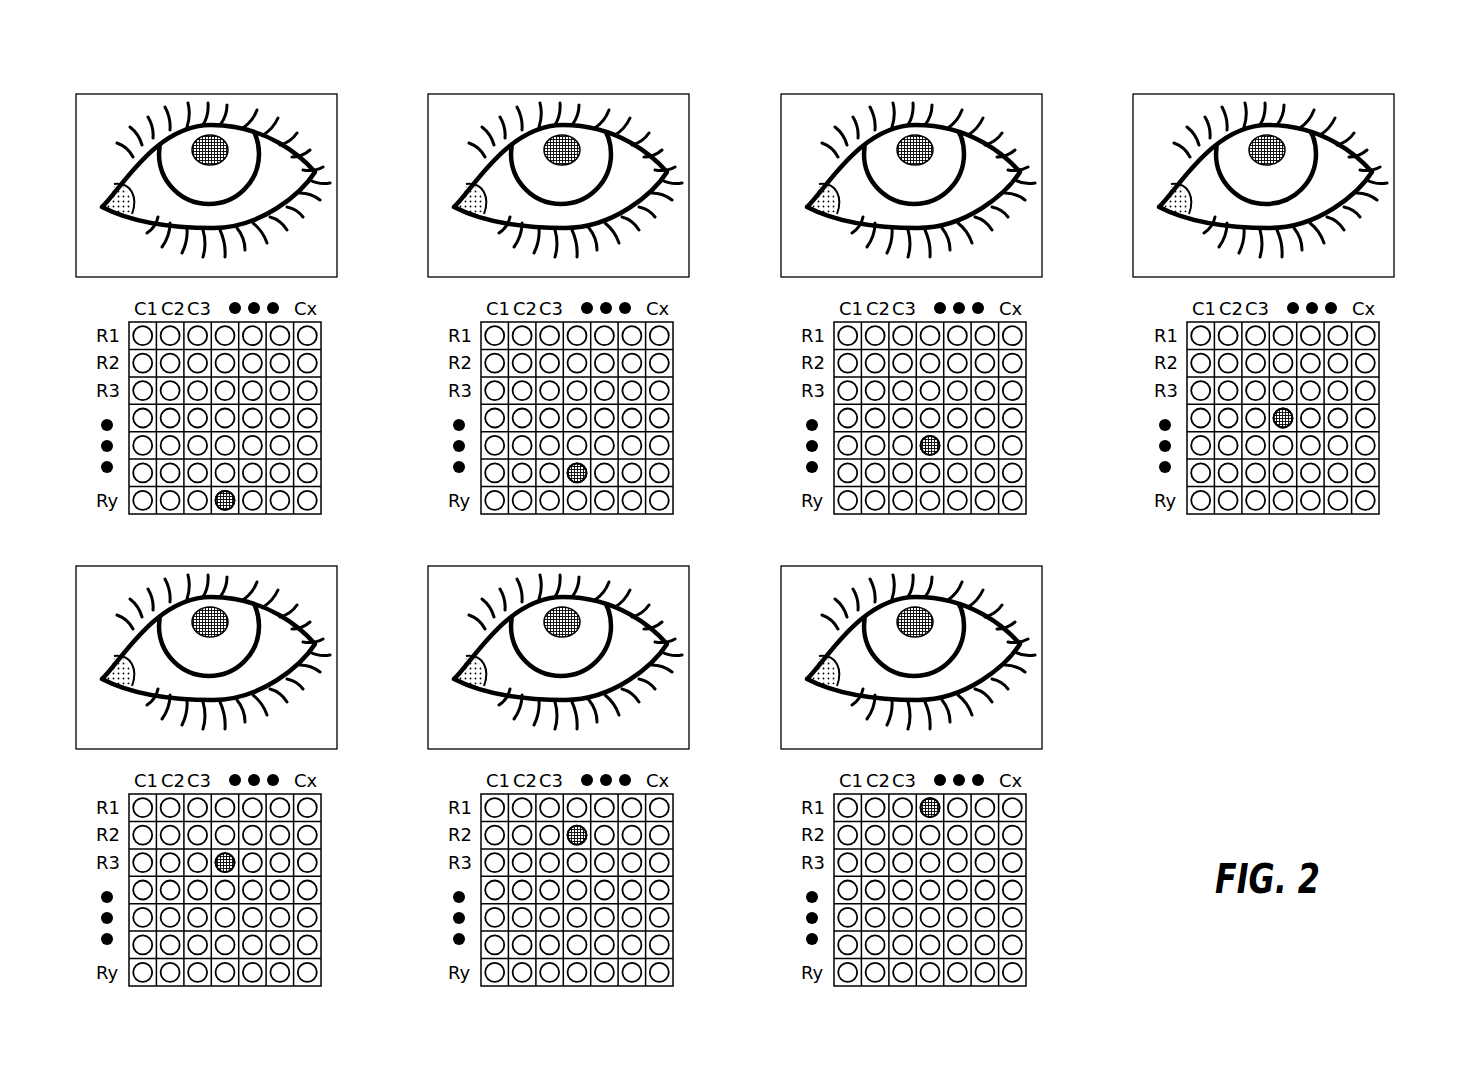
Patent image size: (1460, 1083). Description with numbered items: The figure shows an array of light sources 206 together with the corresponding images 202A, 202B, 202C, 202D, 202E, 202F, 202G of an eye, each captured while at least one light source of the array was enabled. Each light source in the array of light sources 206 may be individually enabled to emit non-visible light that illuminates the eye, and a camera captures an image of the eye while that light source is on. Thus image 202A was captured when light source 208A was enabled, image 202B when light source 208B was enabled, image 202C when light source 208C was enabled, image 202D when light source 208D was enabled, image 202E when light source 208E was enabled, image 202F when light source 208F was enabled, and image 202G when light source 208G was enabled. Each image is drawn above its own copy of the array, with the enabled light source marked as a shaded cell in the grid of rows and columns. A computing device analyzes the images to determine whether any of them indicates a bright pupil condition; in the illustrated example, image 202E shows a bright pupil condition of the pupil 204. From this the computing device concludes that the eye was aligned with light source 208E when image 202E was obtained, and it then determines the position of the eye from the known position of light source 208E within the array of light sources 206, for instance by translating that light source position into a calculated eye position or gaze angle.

The image 202A is at (297, 105).
The image 202B is at (649, 105).
The image 202C is at (1002, 105).
The image 202D is at (1354, 105).
The image 202E is at (297, 577).
The image 202F is at (649, 577).
The image 202G is at (1002, 577).
The pupil 204 is at (210, 147).
The array of light sources 206 is at (774, 638).
The light source 208A is at (225, 500).
The light source 208B is at (577, 473).
The light source 208C is at (930, 445).
The light source 208D is at (1283, 418).
The light source 208E is at (225, 862).
The light source 208F is at (577, 835).
The light source 208G is at (930, 808).